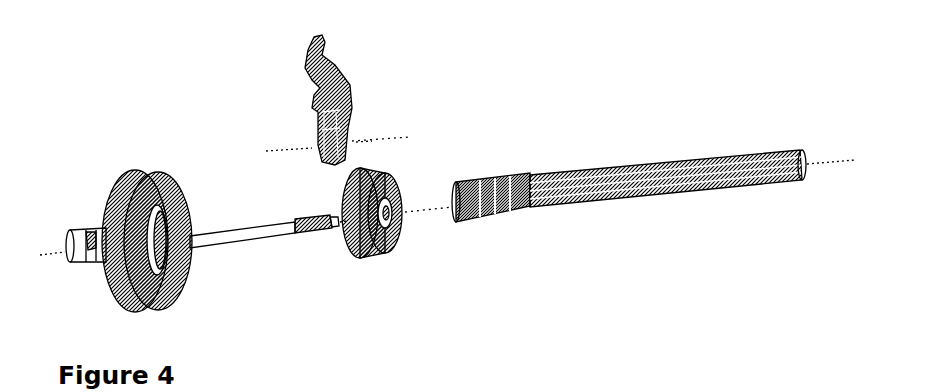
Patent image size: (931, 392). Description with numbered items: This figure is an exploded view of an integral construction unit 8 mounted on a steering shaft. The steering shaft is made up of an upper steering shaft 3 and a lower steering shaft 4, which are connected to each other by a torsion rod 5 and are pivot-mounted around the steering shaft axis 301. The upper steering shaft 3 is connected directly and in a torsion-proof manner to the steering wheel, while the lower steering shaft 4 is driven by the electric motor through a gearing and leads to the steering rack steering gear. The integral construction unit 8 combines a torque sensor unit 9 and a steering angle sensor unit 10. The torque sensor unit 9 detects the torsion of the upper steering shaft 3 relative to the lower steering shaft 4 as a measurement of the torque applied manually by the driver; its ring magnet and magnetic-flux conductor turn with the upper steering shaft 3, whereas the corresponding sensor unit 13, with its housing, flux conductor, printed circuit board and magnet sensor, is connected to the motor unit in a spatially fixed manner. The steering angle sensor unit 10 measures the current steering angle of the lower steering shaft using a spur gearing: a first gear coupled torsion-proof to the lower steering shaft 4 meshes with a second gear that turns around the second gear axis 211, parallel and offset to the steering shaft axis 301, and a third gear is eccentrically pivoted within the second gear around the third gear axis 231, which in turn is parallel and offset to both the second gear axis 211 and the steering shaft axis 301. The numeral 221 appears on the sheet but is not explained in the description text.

The upper steering shaft 3 is at (651, 175).
The steering shaft axis 301 is at (830, 160).
The lower steering shaft 4 is at (76, 232).
The torsion rod 5 is at (246, 233).
The integral construction unit 8 is at (374, 87).
The torque sensor unit 9 is at (374, 87).
The steering angle sensor unit 10 is at (352, 71).
The sensor unit 13 is at (305, 136).
The second gear axis 211 is at (406, 134).
The third gear axis 231 is at (360, 141).
The hub element 221 is at (588, 382).